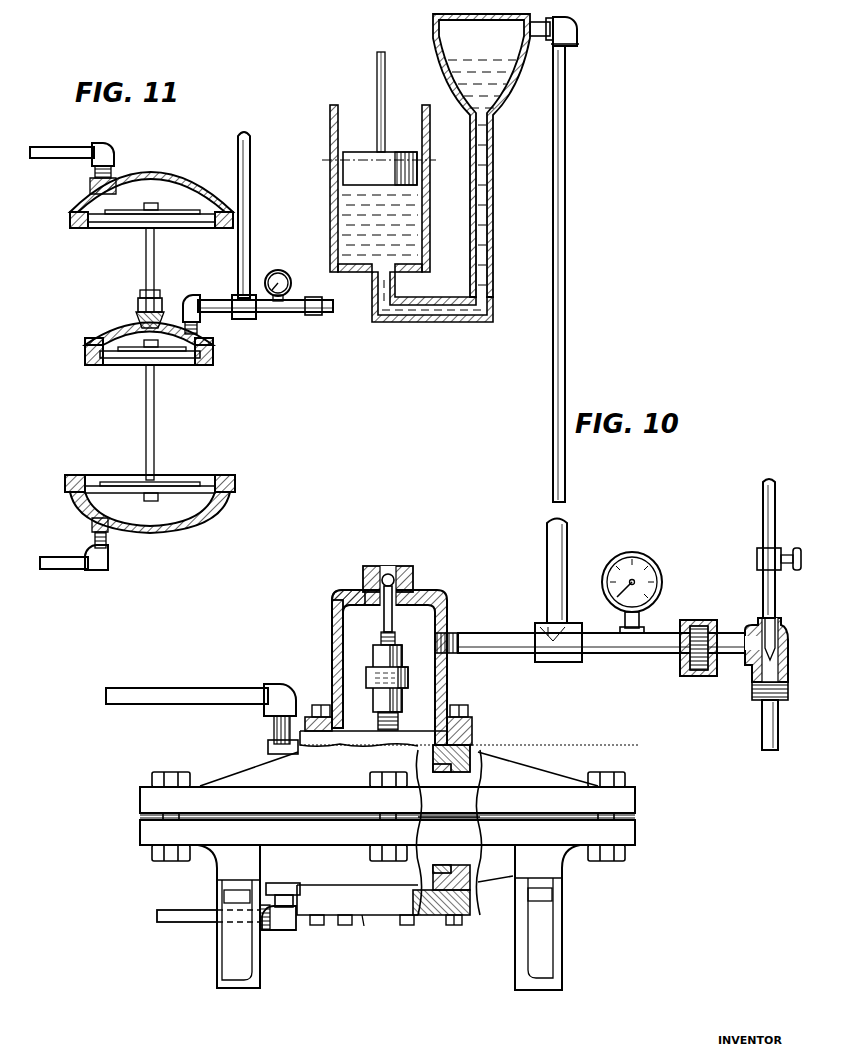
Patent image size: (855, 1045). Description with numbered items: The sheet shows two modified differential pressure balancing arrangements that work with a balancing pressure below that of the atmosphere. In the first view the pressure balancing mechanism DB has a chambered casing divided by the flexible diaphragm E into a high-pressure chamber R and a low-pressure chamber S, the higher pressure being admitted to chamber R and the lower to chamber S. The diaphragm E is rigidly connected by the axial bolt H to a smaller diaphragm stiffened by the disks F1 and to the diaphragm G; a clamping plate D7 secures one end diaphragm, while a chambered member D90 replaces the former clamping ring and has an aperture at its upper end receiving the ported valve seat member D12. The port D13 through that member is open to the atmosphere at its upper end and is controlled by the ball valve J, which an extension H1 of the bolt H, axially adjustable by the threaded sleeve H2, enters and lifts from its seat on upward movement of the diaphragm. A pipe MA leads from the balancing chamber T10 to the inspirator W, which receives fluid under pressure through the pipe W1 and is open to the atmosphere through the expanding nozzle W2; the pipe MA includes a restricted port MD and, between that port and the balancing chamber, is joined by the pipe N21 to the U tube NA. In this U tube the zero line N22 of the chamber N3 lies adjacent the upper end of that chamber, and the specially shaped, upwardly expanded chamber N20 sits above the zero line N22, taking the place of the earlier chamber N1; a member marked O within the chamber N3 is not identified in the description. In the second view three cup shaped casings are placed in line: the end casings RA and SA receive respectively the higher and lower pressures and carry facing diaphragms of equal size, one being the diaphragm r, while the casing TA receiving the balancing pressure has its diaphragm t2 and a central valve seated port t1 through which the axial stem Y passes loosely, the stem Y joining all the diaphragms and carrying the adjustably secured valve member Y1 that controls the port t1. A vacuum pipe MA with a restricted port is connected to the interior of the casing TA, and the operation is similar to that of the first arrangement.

In FIG. 11, the end casing RA is at (162, 180).
In FIG. 11, the diaphragm r is at (204, 224).
In FIG. 11, the chamber N1 is at (250, 193).
In FIG. 11, the valve seated port t1 is at (136, 320).
In FIG. 11, the valve member Y1 is at (160, 306).
In FIG. 11, the casing TA is at (108, 330).
In FIG. 11, the pipe MA is at (230, 318).
In FIG. 10, the pipe MA is at (526, 656).
In FIG. 11, the diaphragm t2 is at (188, 360).
In FIG. 11, the axial stem Y is at (154, 437).
In FIG. 11, the pressure chamber S is at (200, 485).
In FIG. 10, the pressure chamber S is at (470, 900).
In FIG. 11, the end casing SA is at (200, 528).
In FIG. 10, the chamber N3 is at (330, 203).
In FIG. 10, the zero line N22 is at (326, 158).
In FIG. 10, the piston O is at (380, 168).
In FIG. 10, the U tube NA is at (402, 290).
In FIG. 10, the specially shaped chamber N20 is at (522, 56).
In FIG. 10, the pipe N21 is at (566, 118).
In FIG. 10, the ball valve J is at (388, 573).
In FIG. 10, the valve seat member D12 is at (408, 568).
In FIG. 10, the port D13 is at (370, 598).
In FIG. 10, the chambered member D90 is at (332, 660).
In FIG. 10, the extension of bolt H H1 is at (383, 621).
In FIG. 10, the threaded adjusting sleeve H2 is at (373, 659).
In FIG. 10, the balancing chamber T10 is at (422, 682).
In FIG. 10, the bolt H is at (378, 718).
In FIG. 10, the disks F1 is at (470, 748).
In FIG. 10, the pressure chamber R is at (472, 750).
In FIG. 10, the pressure balancing mechanism DB is at (250, 780).
In FIG. 10, the flexible diaphragm E is at (304, 816).
In FIG. 10, the pipe W1 is at (763, 508).
In FIG. 10, the inspirator W is at (788, 630).
In FIG. 10, the expanding nozzle W2 is at (762, 738).
In FIG. 10, the restricted port MD is at (702, 678).
In FIG. 10, the flexible diaphragm G is at (455, 926).
In FIG. 10, the clamping plate D7 is at (344, 926).